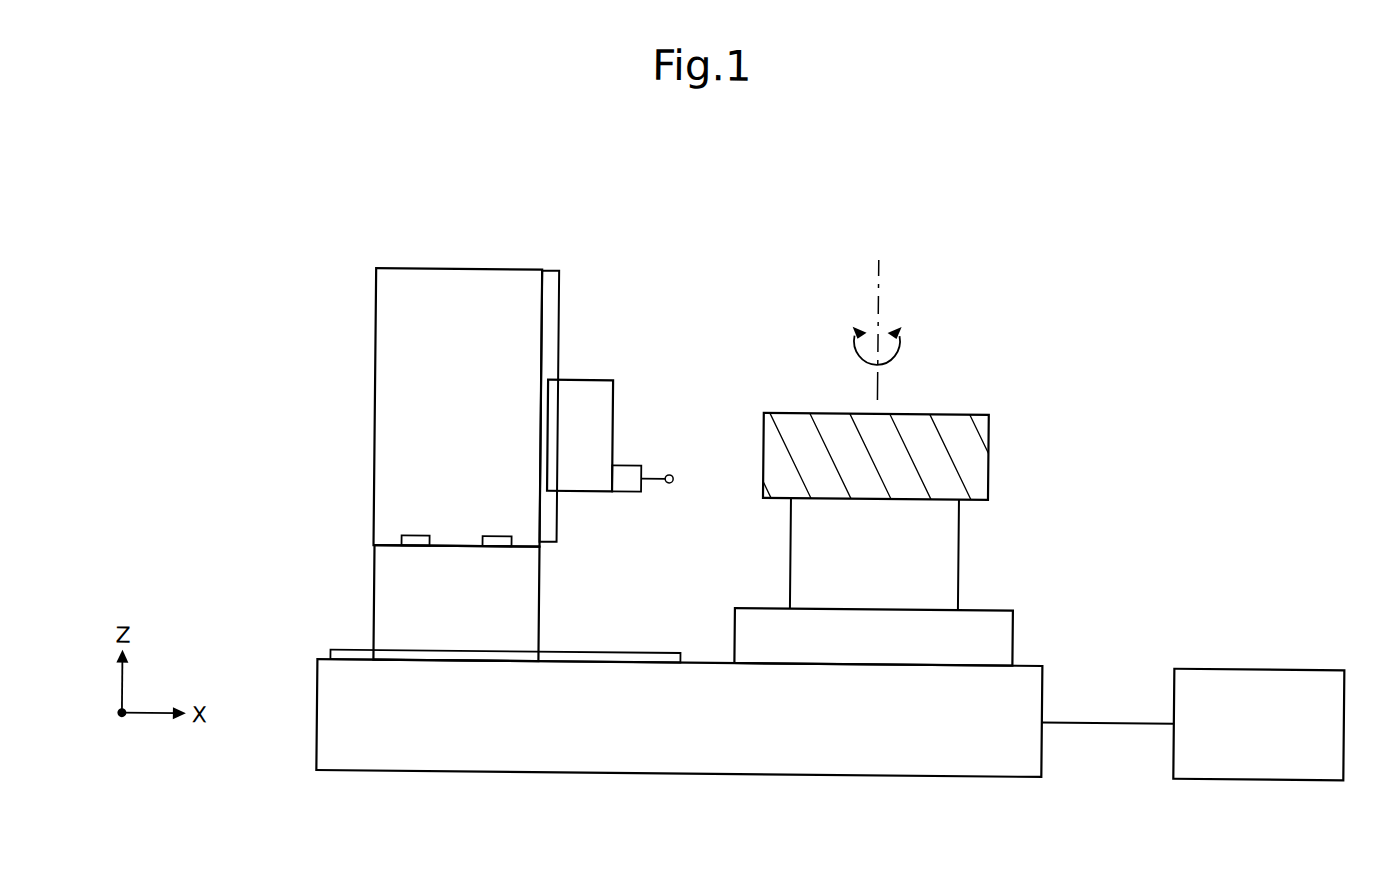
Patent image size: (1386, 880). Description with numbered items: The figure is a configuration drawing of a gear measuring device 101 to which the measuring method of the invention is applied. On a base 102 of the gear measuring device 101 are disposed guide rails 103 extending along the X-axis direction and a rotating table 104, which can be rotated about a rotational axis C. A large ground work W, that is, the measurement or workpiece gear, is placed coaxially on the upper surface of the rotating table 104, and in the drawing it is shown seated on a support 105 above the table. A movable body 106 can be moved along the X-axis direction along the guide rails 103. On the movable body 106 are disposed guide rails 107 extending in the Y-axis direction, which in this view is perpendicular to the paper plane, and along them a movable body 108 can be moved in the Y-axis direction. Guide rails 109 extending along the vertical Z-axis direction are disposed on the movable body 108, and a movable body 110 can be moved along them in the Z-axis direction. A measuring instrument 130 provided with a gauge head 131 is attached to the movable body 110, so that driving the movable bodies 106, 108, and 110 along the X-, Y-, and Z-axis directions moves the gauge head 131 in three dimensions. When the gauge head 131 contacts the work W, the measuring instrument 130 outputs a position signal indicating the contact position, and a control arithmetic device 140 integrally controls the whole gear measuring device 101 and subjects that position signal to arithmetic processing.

The gear measuring device 101 is at (693, 223).
The base 102 is at (1034, 684).
The guide rails 103 is at (604, 656).
The rotating table 104 is at (753, 614).
The workpiece support 105 is at (874, 554).
The movable body 106 is at (395, 603).
The guide rails 107 is at (489, 540).
The movable body 108 is at (391, 368).
The guide rails 109 is at (547, 288).
The movable body 110 is at (581, 381).
The measuring instrument 130 is at (622, 486).
The gauge head 131 is at (651, 482).
The control arithmetic device 140 is at (1274, 663).
The work W is at (980, 419).
The rotational axis C is at (888, 330).